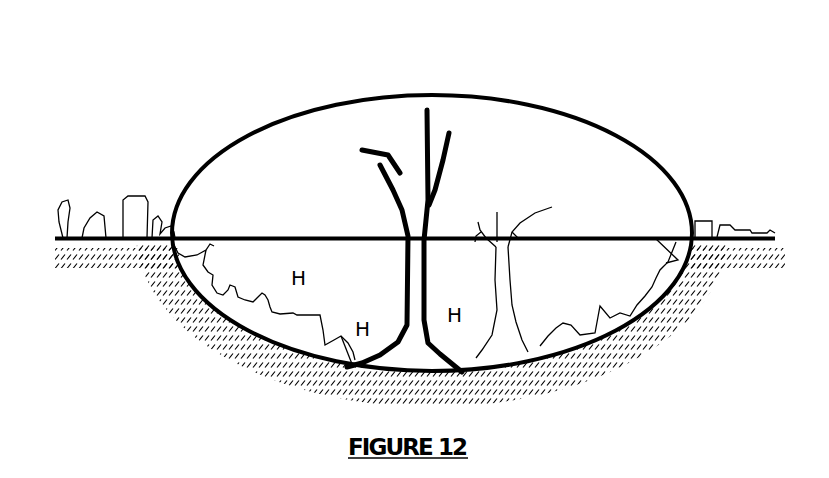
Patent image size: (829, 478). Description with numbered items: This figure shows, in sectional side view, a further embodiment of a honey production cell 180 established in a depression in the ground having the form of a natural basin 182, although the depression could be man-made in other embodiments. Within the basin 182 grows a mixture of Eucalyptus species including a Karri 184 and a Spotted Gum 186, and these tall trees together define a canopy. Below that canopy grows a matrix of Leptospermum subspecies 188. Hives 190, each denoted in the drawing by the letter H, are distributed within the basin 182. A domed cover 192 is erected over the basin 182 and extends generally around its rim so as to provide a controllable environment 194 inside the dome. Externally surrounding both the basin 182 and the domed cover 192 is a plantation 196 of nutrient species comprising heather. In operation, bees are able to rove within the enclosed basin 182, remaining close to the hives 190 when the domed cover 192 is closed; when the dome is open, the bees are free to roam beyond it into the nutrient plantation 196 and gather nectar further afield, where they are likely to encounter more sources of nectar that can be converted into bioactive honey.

The cell 180 is at (221, 92).
The natural basin 182 is at (592, 352).
The Karri 184 is at (432, 138).
The Spotted Gum 186 is at (521, 221).
The matrix of Leptospermum subspecies 188 is at (229, 302).
The hives 190 is at (300, 358).
The domed cover 192 is at (199, 163).
The controllable environment 194 is at (289, 193).
The plantation 196 is at (116, 194).